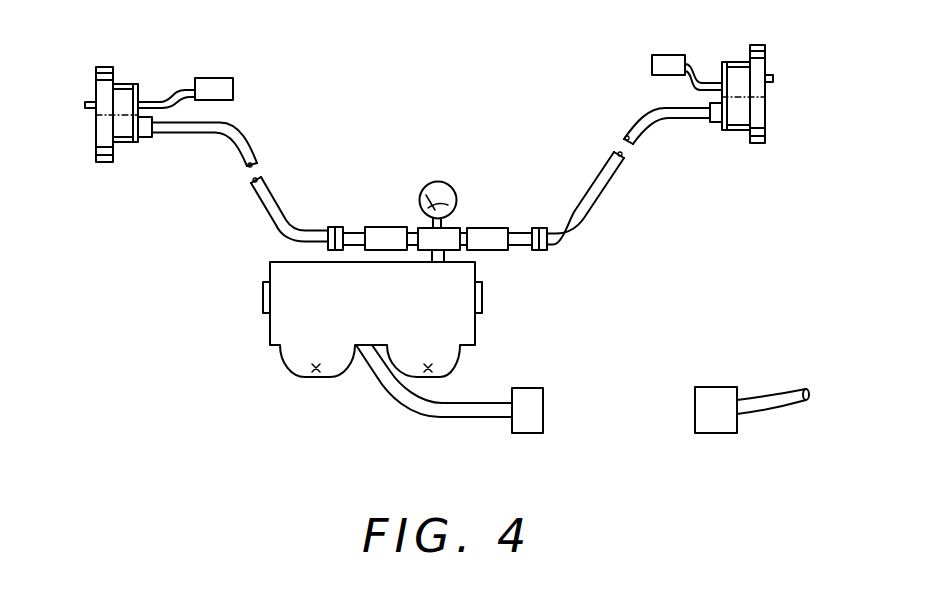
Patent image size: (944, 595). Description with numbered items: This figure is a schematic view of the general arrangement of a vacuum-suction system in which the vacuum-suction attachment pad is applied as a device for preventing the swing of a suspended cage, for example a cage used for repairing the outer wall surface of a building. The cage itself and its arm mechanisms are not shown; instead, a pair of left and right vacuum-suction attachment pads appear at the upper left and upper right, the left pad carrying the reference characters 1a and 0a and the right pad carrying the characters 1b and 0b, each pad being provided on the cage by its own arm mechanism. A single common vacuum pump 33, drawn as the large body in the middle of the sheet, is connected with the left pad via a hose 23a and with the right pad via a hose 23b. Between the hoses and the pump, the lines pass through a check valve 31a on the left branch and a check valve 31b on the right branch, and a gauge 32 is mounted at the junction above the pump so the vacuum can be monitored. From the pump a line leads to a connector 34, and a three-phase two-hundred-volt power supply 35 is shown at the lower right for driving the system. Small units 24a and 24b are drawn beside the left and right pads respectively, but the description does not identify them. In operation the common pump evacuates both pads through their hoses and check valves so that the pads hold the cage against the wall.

The first hydraulic actuator flange 0a is at (100, 142).
The first hydraulic actuator body 1a is at (103, 67).
The first sensor 24a is at (218, 78).
The hose 23a is at (278, 198).
The check valve 31a is at (386, 227).
The gauge 32 is at (442, 182).
The check valve 31b is at (492, 232).
The hose 23b is at (610, 192).
The second hydraulic actuator flange 0b is at (770, 90).
The second hydraulic actuator body 1b is at (770, 115).
The second sensor 24b is at (668, 55).
The vacuum pump 33 is at (283, 349).
The connector 34 is at (544, 413).
The three-phase 200 V power supply 35 is at (710, 433).